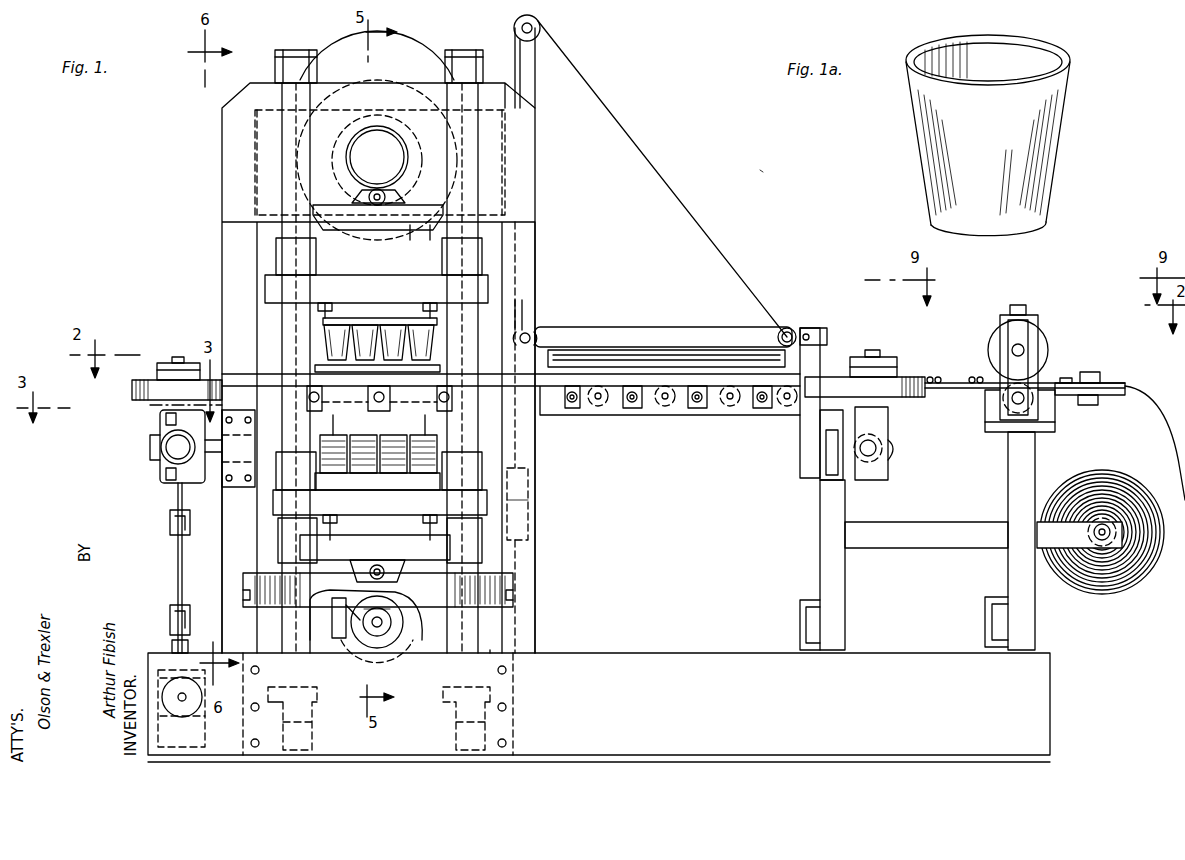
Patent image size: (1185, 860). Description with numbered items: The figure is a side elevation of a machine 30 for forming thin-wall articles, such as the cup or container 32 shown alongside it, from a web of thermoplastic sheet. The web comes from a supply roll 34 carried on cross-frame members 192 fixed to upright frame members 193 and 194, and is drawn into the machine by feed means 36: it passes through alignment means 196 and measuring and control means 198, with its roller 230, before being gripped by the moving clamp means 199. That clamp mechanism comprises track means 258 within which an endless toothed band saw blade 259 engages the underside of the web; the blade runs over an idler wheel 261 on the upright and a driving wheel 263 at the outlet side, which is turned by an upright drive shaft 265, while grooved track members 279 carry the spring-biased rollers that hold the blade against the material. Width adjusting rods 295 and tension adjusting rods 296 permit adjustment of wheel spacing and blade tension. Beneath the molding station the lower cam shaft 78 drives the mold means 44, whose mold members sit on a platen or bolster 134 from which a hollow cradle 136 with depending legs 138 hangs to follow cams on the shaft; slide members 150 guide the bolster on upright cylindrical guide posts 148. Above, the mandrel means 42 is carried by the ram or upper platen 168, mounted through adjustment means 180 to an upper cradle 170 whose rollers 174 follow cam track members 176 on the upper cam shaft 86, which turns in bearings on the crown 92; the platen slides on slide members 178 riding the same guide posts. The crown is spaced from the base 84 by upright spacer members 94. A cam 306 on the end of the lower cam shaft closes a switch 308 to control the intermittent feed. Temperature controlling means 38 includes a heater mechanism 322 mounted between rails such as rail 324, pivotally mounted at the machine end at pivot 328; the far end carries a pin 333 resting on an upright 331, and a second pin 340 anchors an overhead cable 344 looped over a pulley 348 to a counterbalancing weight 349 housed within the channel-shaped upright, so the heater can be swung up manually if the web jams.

In FIG. 1, the machine 30 is at (763, 166).
In FIG. 1A, the thin wall cup or container 32 is at (1068, 143).
In FIG. 1, the supply roll 34 is at (1140, 575).
In FIG. 1, the feed means 36 is at (1055, 413).
In FIG. 1, the temperature controlling means 38 is at (654, 313).
In FIG. 1, the mandrel means 42 is at (380, 324).
In FIG. 1, the mold means 44 is at (442, 446).
In FIG. 1, the lower cam shaft 78 is at (377, 628).
In FIG. 1, the machine base 84 is at (634, 740).
In FIG. 1, the upper cam shaft 86 is at (368, 163).
In FIG. 1, the crown 92 is at (228, 140).
In FIG. 1, the upright spacer members 94 is at (228, 580).
In FIG. 1, the platen or bolster 134 is at (273, 505).
In FIG. 1, the hollow cradle 136 is at (392, 535).
In FIG. 1, the cradle leg 138 is at (394, 565).
In FIG. 1, the upright cylindrical guide posts 148 is at (515, 630).
In FIG. 1, the slide members 150 is at (300, 540).
In FIG. 1, the ram or upper platen 168 is at (265, 289).
In FIG. 1, the upper cradle 170 is at (380, 243).
In FIG. 1, the roller 174 is at (363, 208).
In FIG. 1, the cam track member 176 is at (445, 172).
In FIG. 1, the slide members 178 is at (512, 318).
In FIG. 1, the adjustment means 180 is at (425, 278).
In FIG. 1, the cross-frame members 192 is at (935, 540).
In FIG. 1, the upright frame member 193 is at (820, 538).
In FIG. 1, the upright frame member 194 is at (1025, 612).
In FIG. 1, the alignment means 196 is at (1102, 370).
In FIG. 1, the measuring and control means 198 is at (1009, 368).
In FIG. 1, the moving clamp means 199 is at (905, 368).
In FIG. 1, the feed roller 230 is at (1040, 345).
In FIG. 1, the track means 258 is at (668, 418).
In FIG. 1, the driving member 259 is at (835, 395).
In FIG. 1, the idler wheel 261 is at (830, 375).
In FIG. 1, the driving wheel member 263 is at (165, 360).
In FIG. 1, the drive shaft 265 is at (178, 566).
In FIG. 1, the grooved track members 279 is at (630, 410).
In FIG. 1, the width adjusting rods 295 is at (170, 450).
In FIG. 1, the tension adjusting rods 296 is at (178, 498).
In FIG. 1, the cam 306 is at (395, 645).
In FIG. 1, the switch 308 is at (338, 642).
In FIG. 1, the heater mechanism 322 is at (733, 350).
In FIG. 1, the rail 324 is at (652, 333).
In FIG. 1, the pivot 328 is at (535, 337).
In FIG. 1, the upright 331 is at (808, 458).
In FIG. 1, the pin 333 is at (805, 325).
In FIG. 1, the second pin 340 is at (788, 328).
In FIG. 1, the overhead cable 344 is at (676, 192).
In FIG. 1, the pulley 348 is at (541, 20).
In FIG. 1, the weight 349 is at (522, 507).